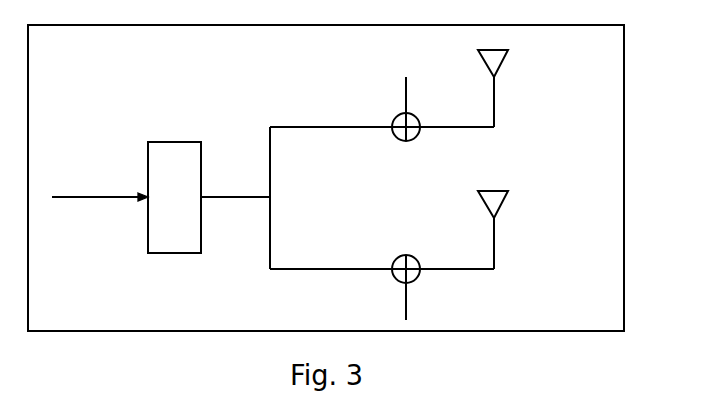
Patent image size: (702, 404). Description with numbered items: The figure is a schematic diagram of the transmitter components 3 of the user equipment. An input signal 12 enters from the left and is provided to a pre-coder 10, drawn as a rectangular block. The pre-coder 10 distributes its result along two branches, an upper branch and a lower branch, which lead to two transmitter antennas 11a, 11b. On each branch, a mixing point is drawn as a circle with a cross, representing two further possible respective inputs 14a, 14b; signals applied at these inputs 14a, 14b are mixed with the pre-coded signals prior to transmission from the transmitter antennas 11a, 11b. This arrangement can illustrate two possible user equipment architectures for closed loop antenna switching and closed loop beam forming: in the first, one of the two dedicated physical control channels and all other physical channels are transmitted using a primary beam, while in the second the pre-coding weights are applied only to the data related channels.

The transmitter / system 3 is at (335, 61).
The pre-coder 10 is at (188, 180).
The input signal 12 is at (83, 197).
The further input 14a is at (405, 90).
The further input 14b is at (405, 292).
The transmitter antenna 11a is at (505, 58).
The transmitter antenna 11b is at (505, 198).